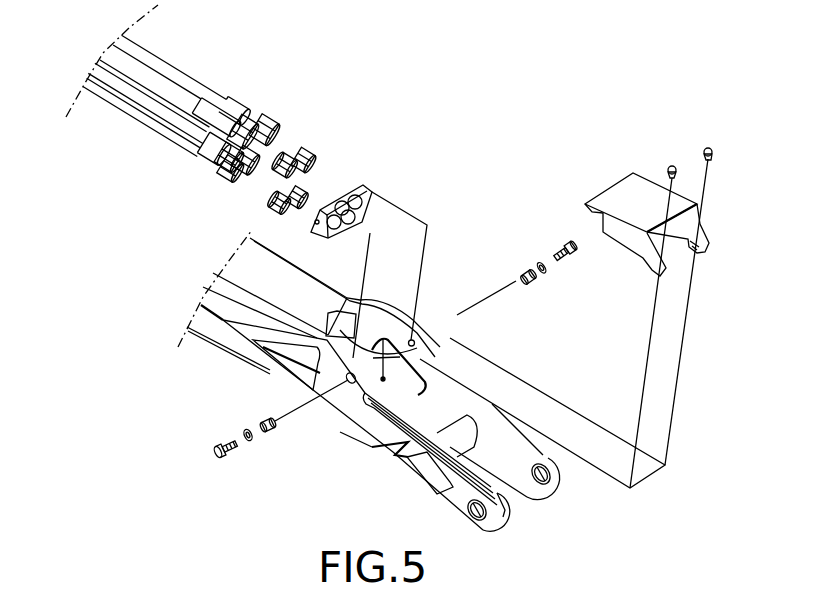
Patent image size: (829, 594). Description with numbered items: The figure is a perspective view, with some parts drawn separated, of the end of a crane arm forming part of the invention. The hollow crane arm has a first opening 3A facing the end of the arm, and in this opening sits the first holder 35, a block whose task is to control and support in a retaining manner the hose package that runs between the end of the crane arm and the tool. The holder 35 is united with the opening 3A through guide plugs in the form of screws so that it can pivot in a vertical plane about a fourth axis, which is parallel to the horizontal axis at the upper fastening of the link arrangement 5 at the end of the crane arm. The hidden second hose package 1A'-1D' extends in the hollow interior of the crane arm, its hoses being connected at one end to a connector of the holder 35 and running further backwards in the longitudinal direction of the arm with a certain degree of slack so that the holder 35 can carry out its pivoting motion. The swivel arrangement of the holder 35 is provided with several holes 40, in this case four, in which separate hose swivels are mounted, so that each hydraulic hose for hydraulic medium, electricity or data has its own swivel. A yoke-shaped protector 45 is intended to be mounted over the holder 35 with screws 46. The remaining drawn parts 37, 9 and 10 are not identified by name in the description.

The second hose package 1A'-1D' is at (185, 107).
The first holder 35 is at (343, 196).
The holes 40 is at (371, 205).
The first opening 3A is at (441, 403).
The bolt 37 is at (553, 247).
The yoke-shaped protector 45 is at (642, 200).
The screws 46 is at (711, 144).
The bolt 9 is at (230, 450).
The washer 10 is at (250, 440).
The link arrangement 5 is at (274, 430).